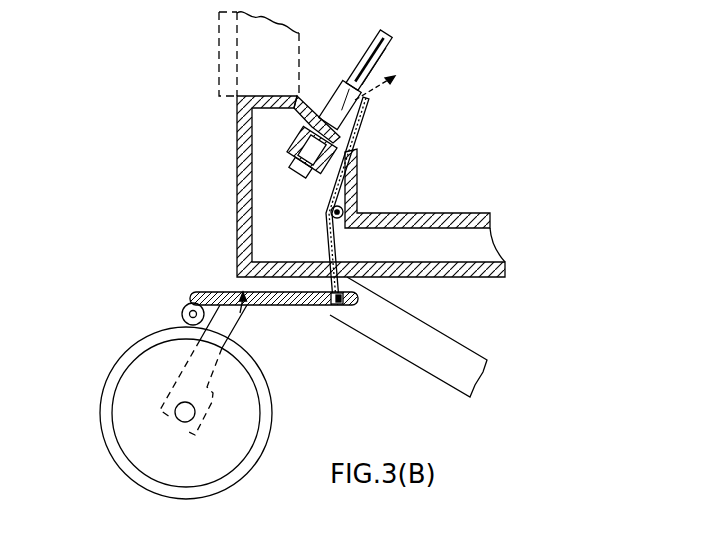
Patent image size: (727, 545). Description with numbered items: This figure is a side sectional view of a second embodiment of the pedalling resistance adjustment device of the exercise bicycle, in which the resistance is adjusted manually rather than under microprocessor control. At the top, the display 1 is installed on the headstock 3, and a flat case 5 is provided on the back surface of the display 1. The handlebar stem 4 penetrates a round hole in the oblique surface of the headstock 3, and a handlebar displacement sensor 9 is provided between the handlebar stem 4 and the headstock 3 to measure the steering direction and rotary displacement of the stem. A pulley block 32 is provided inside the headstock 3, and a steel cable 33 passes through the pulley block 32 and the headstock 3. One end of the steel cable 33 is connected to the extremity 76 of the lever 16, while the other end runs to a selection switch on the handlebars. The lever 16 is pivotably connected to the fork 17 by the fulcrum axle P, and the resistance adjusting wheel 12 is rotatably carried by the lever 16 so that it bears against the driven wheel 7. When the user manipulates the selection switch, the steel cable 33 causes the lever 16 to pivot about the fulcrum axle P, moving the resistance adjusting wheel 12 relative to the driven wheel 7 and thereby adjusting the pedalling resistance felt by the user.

The display 1 is at (258, 55).
The flat case 5 is at (233, 57).
The headstock 3 is at (245, 135).
The handlebar stem 4 is at (387, 34).
The handlebar displacement sensor 9 is at (357, 100).
The steel cable 33 is at (362, 120).
The pulley block 32 is at (355, 188).
The lever 16 is at (223, 292).
The extremity 76 is at (333, 306).
The fulcrum axle P is at (255, 316).
The resistance adjusting wheel 12 is at (182, 310).
The driven wheel 7 is at (124, 364).
The fork 17 is at (230, 320).